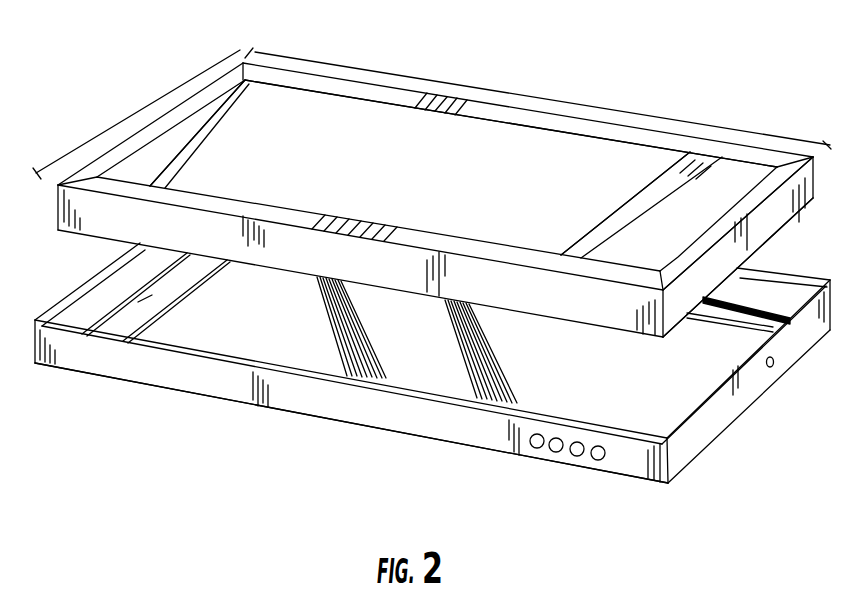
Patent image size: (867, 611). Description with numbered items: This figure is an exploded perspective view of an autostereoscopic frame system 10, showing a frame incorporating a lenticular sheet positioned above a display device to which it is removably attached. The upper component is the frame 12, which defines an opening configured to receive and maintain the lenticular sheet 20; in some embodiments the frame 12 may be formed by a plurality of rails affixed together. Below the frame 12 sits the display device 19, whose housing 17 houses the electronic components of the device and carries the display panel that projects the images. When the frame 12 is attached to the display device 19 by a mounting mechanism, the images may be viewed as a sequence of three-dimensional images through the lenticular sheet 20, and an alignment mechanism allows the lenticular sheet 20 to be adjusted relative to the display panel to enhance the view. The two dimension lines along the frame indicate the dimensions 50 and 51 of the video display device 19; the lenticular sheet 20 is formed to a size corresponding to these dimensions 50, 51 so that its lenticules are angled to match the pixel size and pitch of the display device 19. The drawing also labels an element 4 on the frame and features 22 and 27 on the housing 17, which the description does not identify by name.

The top frame 4 is at (56, 214).
The autostereoscopic frame system 10 is at (35, 343).
The frame 12 is at (179, 388).
The housing 17 is at (750, 203).
The display device 19 is at (498, 128).
The lenticular sheet 20 is at (393, 367).
The side hole 22 is at (770, 368).
The front ventilation holes 27 is at (604, 458).
The dimension of the video display device 50 is at (143, 108).
The dimension of the video display device 51 is at (640, 113).